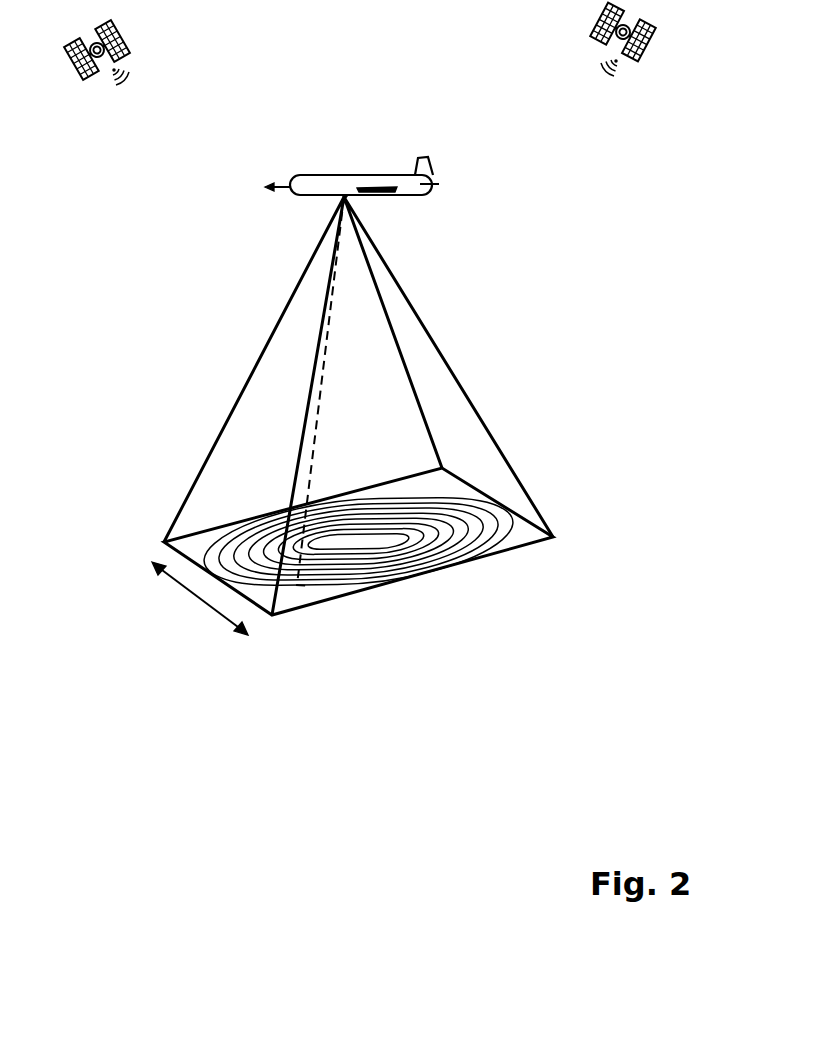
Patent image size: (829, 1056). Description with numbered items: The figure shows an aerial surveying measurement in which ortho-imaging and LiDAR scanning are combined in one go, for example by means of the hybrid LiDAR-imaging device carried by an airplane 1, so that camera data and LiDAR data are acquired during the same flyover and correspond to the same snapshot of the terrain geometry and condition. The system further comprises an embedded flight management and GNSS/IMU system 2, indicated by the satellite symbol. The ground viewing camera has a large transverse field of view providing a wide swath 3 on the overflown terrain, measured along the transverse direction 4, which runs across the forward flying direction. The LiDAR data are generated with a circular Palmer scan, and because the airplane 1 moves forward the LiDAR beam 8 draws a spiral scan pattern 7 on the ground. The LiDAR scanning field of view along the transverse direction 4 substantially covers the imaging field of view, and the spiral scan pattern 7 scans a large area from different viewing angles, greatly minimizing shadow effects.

The airplane 1 is at (289, 177).
The embedded flight management and GNSS/IMU system 2 is at (645, 55).
The swath 3 is at (532, 442).
The transverse direction 4 is at (200, 598).
The spiral scan pattern 7 is at (200, 528).
The LiDAR beam 8 is at (312, 452).